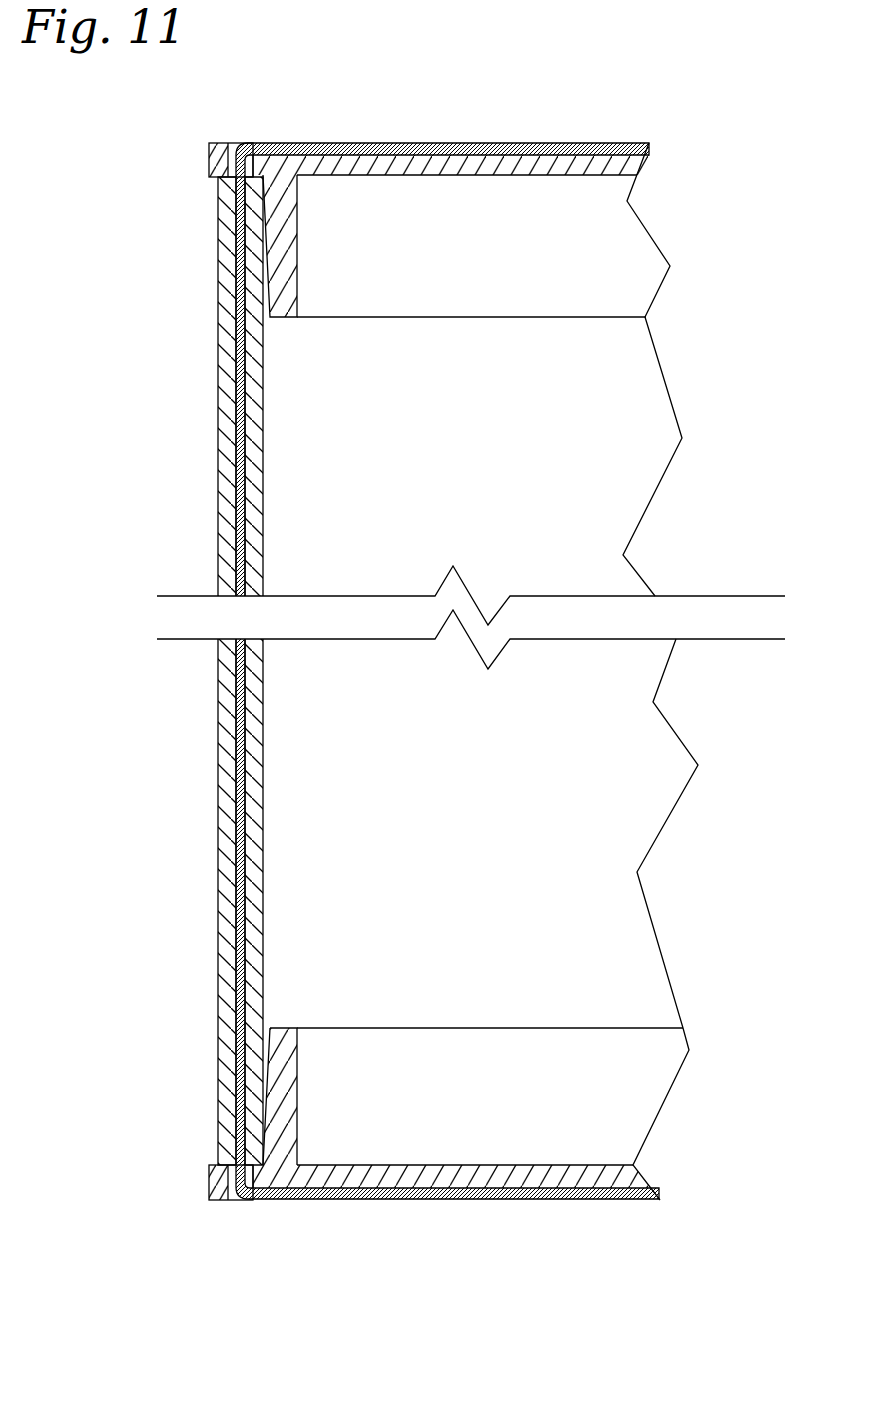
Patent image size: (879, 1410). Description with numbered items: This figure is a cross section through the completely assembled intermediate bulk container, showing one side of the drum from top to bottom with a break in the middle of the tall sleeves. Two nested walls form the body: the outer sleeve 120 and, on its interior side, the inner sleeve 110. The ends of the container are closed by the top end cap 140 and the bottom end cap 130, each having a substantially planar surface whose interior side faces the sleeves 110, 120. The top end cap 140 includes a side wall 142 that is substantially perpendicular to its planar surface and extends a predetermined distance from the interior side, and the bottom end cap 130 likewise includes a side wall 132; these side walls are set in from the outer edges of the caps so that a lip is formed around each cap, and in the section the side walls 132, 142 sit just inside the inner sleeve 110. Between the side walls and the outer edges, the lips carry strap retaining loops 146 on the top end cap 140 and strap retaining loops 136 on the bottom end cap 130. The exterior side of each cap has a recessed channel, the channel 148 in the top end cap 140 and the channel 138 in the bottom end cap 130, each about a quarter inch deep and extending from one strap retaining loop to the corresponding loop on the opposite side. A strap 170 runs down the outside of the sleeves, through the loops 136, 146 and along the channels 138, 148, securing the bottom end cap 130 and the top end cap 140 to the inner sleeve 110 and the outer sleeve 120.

The inner sleeve 110 is at (263, 492).
The outer sleeve 120 is at (218, 505).
The bottom end cap 130 is at (545, 1200).
The side wall 132 is at (300, 1028).
The strap retaining loops 136 is at (230, 1200).
The recessed channel 138 is at (398, 1199).
The top end cap 140 is at (501, 143).
The side wall 142 is at (298, 282).
The strap retaining loops 146 is at (240, 143).
The recessed channel 148 is at (362, 143).
The strap 170 is at (218, 375).